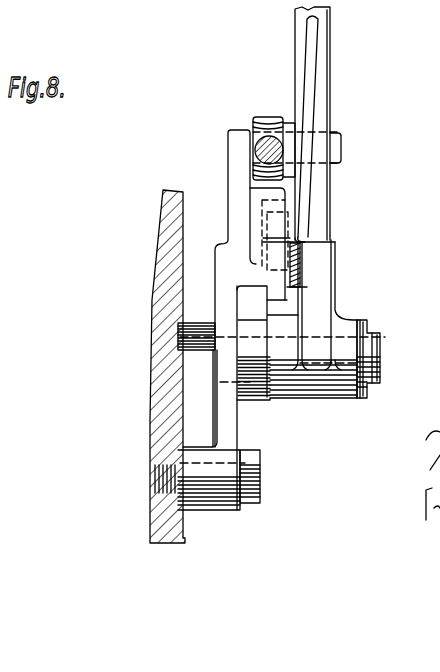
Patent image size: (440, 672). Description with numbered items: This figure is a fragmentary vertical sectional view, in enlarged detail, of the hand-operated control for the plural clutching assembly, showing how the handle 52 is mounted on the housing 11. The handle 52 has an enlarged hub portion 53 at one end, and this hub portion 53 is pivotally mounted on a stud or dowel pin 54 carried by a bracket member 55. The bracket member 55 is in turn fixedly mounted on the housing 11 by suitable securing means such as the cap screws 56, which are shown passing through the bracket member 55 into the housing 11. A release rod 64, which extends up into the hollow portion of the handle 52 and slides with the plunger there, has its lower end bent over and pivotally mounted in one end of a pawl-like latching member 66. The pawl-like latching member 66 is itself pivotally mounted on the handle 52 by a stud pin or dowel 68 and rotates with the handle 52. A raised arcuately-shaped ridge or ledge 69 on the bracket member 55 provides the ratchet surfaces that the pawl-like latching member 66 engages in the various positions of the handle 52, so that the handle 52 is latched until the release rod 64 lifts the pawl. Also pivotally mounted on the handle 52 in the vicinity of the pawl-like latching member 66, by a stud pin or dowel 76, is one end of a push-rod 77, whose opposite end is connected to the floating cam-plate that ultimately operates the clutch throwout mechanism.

The housing 11 is at (160, 397).
The handle 52 is at (333, 40).
The hub portion 53 is at (340, 327).
The stud pin 54 is at (381, 348).
The bracket member 55 is at (230, 428).
The cap screws 56 is at (253, 477).
The release rod 64 is at (312, 68).
The pawl-like latching member 66 is at (280, 290).
The stud pin 68 is at (336, 248).
The raised arcuately-shaped ridge 69 is at (253, 192).
The stud pin 76 is at (338, 148).
The push-rod 77 is at (270, 135).